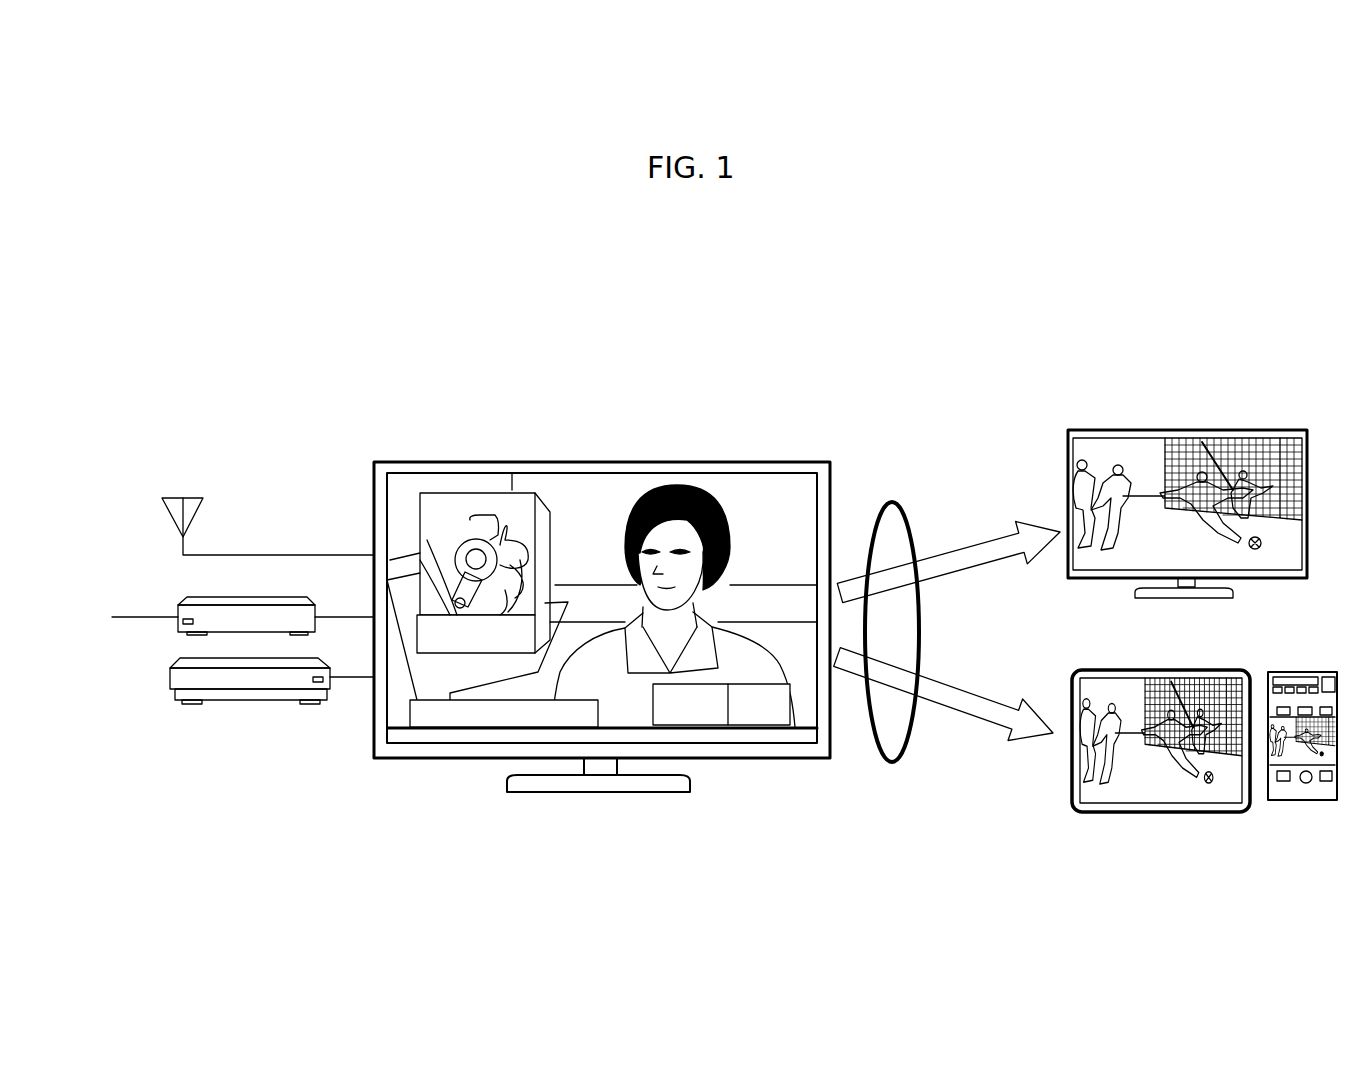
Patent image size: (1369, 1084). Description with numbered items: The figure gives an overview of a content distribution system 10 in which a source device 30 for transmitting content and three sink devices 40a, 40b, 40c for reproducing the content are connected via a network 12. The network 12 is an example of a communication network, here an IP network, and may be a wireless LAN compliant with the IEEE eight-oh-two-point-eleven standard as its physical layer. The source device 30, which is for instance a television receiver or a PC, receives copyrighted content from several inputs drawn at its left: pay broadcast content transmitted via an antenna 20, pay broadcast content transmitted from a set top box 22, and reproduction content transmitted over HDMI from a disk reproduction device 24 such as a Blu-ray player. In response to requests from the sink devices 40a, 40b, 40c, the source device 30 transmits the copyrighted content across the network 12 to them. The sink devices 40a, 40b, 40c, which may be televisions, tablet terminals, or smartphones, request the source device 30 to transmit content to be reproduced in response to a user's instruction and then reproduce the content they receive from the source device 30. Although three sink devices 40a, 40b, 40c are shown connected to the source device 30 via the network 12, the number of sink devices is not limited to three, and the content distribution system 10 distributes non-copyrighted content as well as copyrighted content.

The content distribution system 10 is at (942, 348).
The network 12 is at (875, 743).
The antenna 20 is at (170, 497).
The set top box 22 is at (185, 597).
The disk reproduction device 24 is at (170, 673).
The source device 30 is at (655, 462).
The sink device 40a is at (1140, 670).
The sink device 40b is at (1277, 670).
The sink device 40c is at (1252, 430).